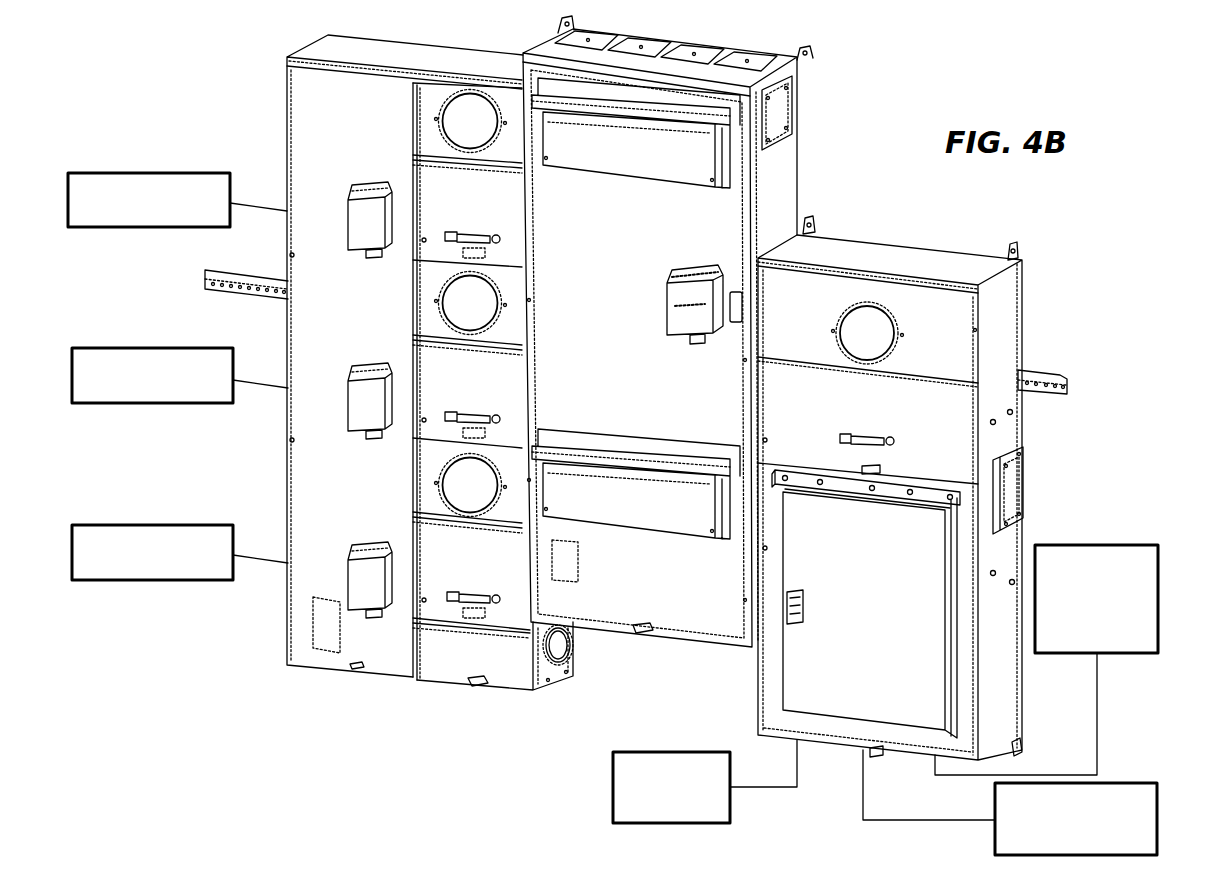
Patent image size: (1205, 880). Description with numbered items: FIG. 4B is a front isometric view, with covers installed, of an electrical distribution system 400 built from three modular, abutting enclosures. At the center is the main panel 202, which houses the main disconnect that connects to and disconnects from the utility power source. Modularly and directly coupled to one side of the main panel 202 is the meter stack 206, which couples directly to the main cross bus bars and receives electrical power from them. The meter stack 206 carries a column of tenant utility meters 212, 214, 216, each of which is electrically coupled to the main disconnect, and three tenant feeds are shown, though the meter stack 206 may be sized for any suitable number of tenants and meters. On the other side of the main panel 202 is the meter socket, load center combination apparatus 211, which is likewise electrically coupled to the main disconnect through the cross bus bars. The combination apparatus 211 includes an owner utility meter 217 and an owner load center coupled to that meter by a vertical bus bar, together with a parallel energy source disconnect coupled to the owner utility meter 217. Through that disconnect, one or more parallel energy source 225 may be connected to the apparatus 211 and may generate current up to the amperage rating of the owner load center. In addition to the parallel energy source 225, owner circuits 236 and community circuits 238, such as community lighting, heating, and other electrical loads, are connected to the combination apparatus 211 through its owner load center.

The electrical distribution system 400 is at (846, 78).
The meter stack 206 is at (278, 52).
The main panel 202 is at (806, 155).
The meter socket, load center combination apparatus 211 is at (892, 232).
The tenant utility meter 212 is at (468, 127).
The tenant utility meter 214 is at (467, 312).
The tenant utility meter 216 is at (457, 486).
The owner utility meter 217 is at (880, 334).
The parallel energy source 225 is at (1098, 545).
The owner circuits 236 is at (672, 752).
The community circuits 238 is at (1113, 783).